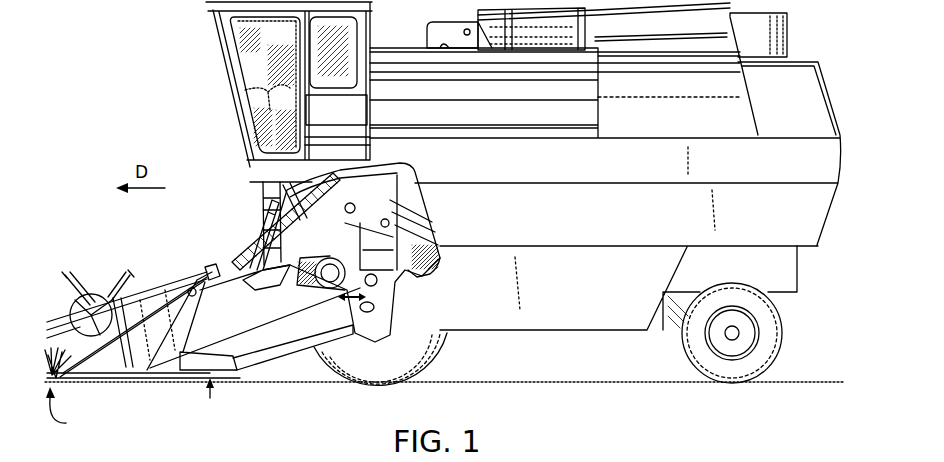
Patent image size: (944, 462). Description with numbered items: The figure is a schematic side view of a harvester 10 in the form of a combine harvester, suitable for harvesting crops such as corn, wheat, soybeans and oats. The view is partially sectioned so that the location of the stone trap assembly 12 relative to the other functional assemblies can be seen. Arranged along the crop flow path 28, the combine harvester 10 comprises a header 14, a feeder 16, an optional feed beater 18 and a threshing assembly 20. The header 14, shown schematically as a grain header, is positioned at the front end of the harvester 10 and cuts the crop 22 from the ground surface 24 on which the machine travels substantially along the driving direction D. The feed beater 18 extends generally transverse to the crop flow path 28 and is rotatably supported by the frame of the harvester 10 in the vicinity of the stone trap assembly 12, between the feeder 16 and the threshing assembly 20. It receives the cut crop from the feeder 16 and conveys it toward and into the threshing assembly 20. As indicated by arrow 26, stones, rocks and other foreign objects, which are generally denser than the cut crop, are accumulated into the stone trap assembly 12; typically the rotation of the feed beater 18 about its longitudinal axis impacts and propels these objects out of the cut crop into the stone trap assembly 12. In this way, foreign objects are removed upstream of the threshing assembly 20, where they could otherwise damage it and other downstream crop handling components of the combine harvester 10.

The harvester 10 is at (176, 72).
The stone trap assembly 12 is at (281, 332).
The header 14 is at (155, 283).
The feeder 16 is at (260, 267).
The feed beater 18 is at (277, 230).
The threshing assembly 20 is at (428, 281).
The crop 22 is at (67, 410).
The ground surface 24 is at (213, 398).
The arrow 26 is at (341, 299).
The crop flow path 28 is at (355, 260).